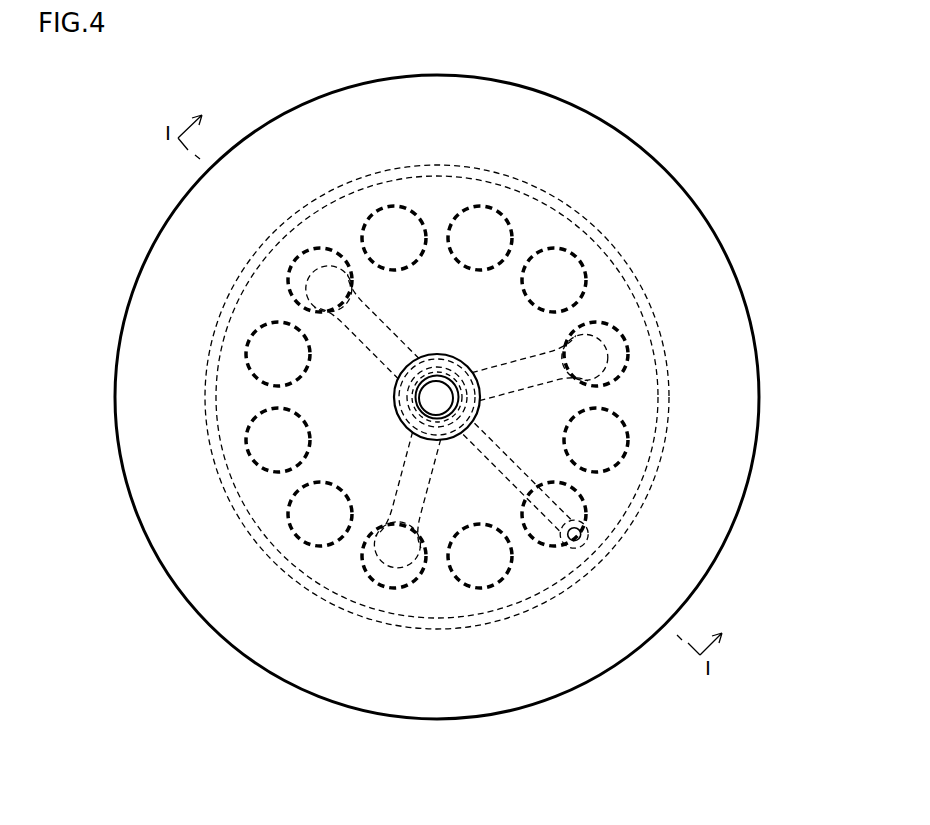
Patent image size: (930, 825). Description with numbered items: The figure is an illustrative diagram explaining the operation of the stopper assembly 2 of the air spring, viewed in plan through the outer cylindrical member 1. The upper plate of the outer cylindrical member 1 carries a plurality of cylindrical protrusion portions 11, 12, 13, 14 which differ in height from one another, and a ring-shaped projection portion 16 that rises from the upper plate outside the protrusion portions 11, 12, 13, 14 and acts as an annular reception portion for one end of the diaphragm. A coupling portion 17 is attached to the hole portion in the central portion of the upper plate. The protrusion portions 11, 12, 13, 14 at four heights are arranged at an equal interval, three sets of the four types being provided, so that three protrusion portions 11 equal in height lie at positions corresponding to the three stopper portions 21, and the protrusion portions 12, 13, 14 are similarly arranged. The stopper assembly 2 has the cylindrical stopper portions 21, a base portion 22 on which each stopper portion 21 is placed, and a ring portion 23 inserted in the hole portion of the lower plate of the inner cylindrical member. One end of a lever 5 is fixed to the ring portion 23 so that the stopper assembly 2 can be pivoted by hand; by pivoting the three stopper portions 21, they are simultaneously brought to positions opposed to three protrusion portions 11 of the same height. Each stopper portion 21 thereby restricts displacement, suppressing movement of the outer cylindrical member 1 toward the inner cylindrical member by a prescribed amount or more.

The outer cylindrical member 1 is at (727, 310).
The stopper assembly 2 is at (505, 762).
The lever 5 is at (520, 473).
The protrusion portion 11 is at (612, 355).
The protrusion portion 12 is at (397, 225).
The protrusion portion 13 is at (562, 270).
The protrusion portion 14 is at (482, 225).
The ring-shaped projection portion 16 is at (637, 282).
The coupling portion 17 is at (437, 407).
The stopper portion 21 is at (410, 550).
The base portion 22 is at (418, 488).
The ring portion 23 is at (437, 433).